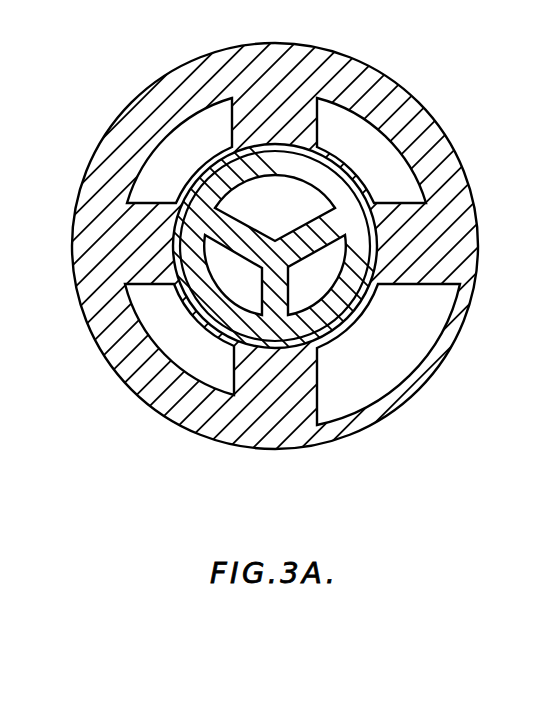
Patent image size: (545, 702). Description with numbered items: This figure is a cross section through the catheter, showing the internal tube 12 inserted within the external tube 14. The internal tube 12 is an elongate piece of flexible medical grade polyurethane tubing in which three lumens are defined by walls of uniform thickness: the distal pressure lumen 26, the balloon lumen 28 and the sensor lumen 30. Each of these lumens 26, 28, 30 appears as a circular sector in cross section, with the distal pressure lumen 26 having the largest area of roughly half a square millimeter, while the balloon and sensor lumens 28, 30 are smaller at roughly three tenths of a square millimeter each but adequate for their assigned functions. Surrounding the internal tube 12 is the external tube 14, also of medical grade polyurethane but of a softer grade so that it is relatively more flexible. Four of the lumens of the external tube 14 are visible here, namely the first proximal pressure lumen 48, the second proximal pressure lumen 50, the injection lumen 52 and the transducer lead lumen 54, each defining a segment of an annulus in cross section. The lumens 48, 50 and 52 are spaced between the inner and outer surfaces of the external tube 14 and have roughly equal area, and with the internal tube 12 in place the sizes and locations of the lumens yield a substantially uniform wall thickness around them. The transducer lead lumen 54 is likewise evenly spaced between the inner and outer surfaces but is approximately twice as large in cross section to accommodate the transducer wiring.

The internal tube 12 is at (371, 238).
The external tube 14 is at (376, 69).
The distal pressure lumen 26 is at (241, 202).
The balloon lumen 28 is at (247, 294).
The sensor lumen 30 is at (305, 292).
The first proximal pressure lumen 48 is at (156, 175).
The second proximal pressure lumen 50 is at (362, 145).
The injection lumen 52 is at (205, 368).
The transducer lead lumen 54 is at (385, 372).